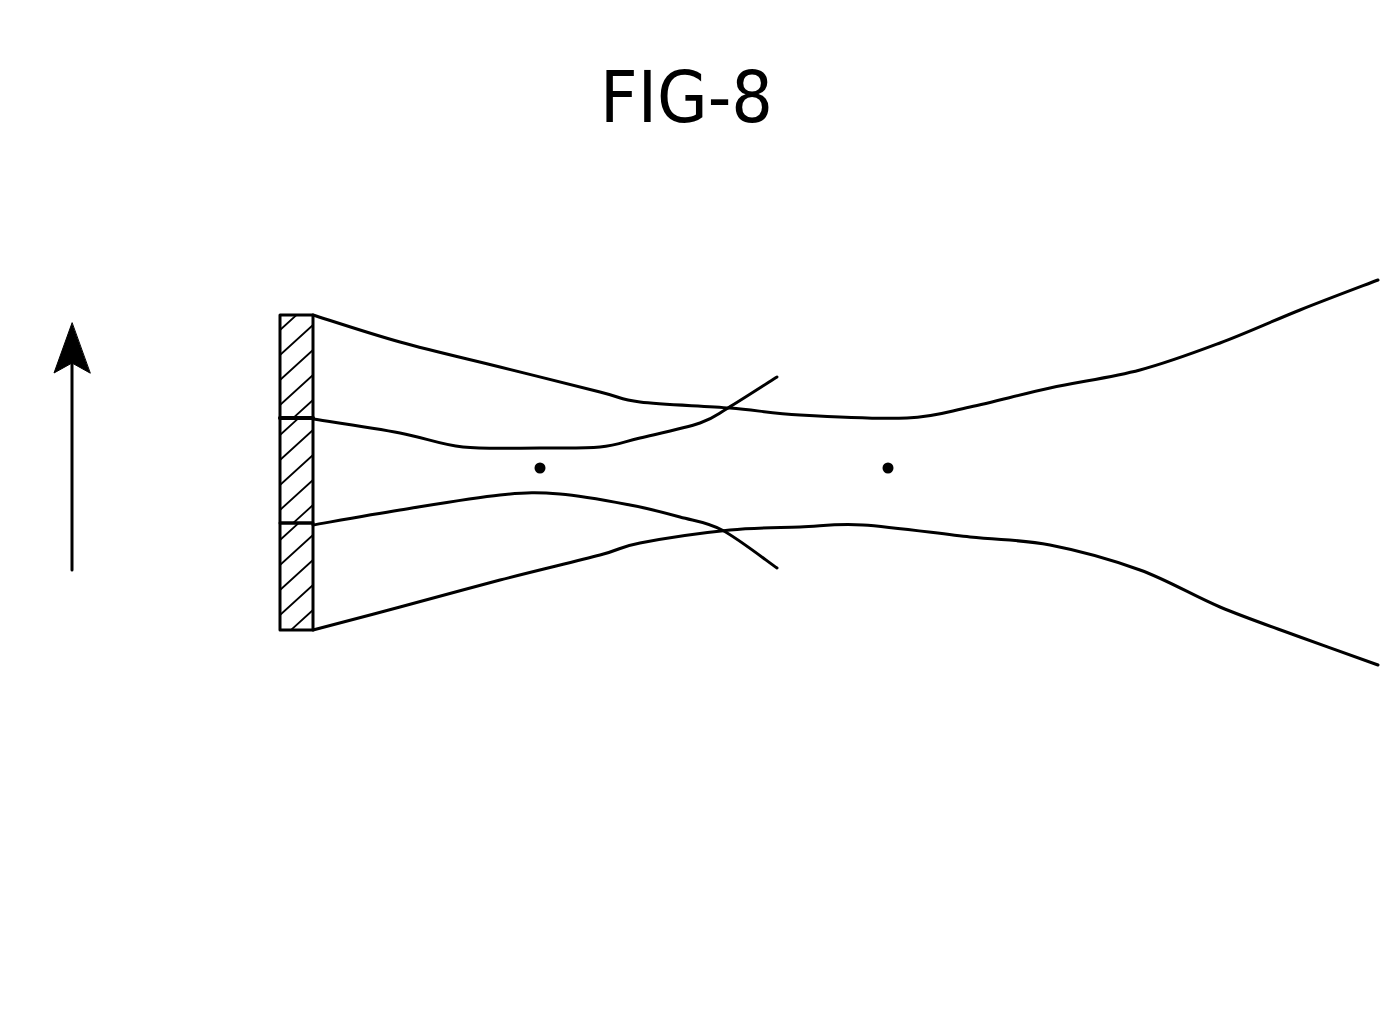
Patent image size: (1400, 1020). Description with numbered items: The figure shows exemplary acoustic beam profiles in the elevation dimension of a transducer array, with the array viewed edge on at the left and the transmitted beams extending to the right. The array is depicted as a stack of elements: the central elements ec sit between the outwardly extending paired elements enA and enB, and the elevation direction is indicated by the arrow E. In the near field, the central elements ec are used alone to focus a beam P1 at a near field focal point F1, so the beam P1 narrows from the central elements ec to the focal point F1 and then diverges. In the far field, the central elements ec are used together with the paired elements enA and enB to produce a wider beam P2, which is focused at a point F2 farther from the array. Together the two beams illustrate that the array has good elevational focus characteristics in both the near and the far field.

The electric field direction E is at (72, 423).
The outwardly extending paired elements enA is at (278, 378).
The central elements ec is at (278, 480).
The outwardly extending paired elements enB is at (278, 583).
The beam P1 is at (463, 447).
The beam P2 is at (1142, 370).
The near field focal point F1 is at (547, 468).
The point F2 is at (895, 468).